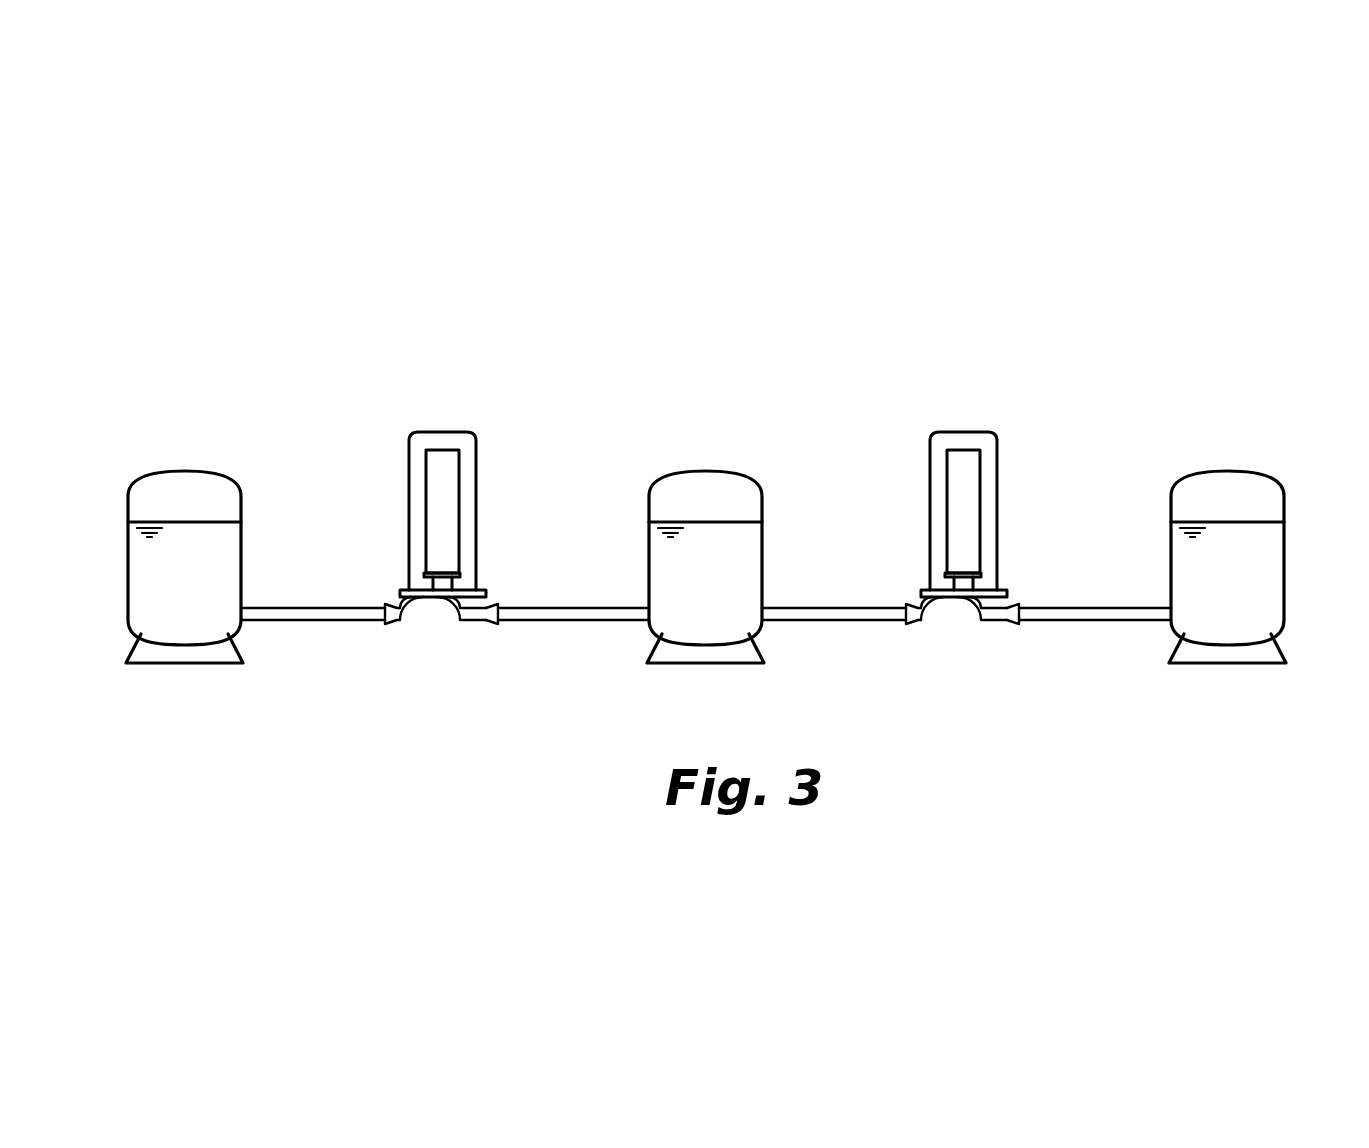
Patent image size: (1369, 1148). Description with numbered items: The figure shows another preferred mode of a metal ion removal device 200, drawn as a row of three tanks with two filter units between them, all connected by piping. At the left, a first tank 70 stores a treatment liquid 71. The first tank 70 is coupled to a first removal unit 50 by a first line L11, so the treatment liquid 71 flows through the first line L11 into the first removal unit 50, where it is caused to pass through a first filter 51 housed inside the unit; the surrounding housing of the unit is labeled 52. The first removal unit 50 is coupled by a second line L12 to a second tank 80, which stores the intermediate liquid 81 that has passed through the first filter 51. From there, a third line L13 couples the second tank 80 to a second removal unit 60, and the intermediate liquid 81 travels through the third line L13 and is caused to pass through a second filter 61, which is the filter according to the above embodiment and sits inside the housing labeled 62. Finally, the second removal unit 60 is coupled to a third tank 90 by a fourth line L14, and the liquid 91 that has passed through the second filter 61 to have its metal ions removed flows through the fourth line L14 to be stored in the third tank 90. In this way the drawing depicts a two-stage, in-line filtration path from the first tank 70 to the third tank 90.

The metal ion removal device 200 is at (865, 268).
The first tank 70 is at (187, 470).
The treatment liquid 71 is at (143, 553).
The second tank 80 is at (706, 470).
The intermediate liquid 81 is at (744, 553).
The third tank 90 is at (1229, 470).
The liquid 91 is at (1266, 553).
The first removal unit 50 is at (442, 430).
The first filter 51 is at (438, 507).
The first filter housing 52 is at (465, 475).
The second removal unit 60 is at (964, 430).
The second filter 61 is at (959, 507).
The second filter housing 62 is at (986, 475).
The first line L11 is at (322, 622).
The second line L12 is at (566, 622).
The third line L13 is at (841, 622).
The fourth line L14 is at (1088, 622).